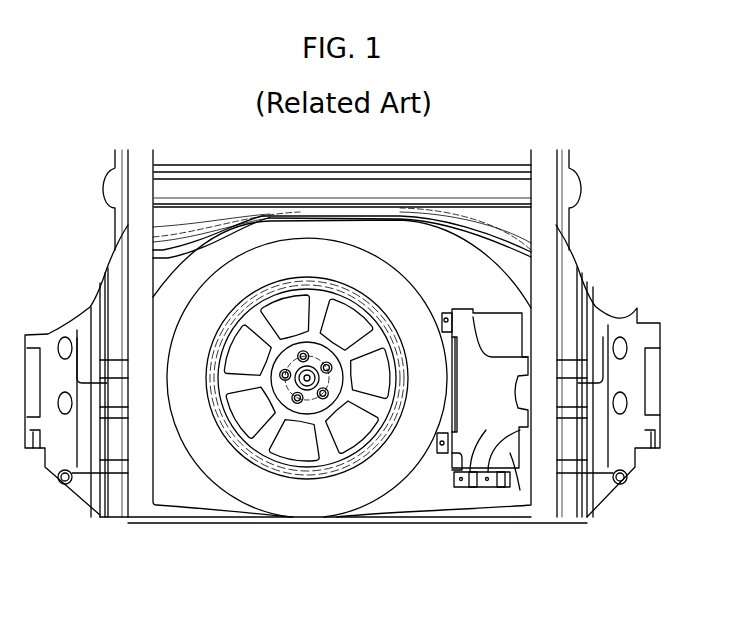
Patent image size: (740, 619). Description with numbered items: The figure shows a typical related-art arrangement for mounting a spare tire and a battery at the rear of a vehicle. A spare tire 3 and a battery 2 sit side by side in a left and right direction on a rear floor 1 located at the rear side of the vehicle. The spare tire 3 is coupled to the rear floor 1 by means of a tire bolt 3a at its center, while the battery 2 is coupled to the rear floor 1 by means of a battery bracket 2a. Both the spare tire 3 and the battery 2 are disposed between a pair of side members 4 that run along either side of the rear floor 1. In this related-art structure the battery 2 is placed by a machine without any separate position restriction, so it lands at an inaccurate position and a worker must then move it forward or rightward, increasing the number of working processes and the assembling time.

The rear floor 1 is at (182, 487).
The battery 2 is at (511, 455).
The battery bracket 2a is at (482, 433).
The spare tire 3 is at (327, 497).
The tire bolt 3a is at (303, 392).
The side members 4 is at (143, 215).